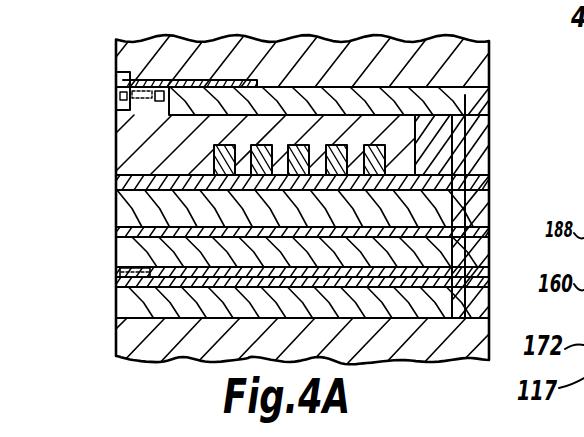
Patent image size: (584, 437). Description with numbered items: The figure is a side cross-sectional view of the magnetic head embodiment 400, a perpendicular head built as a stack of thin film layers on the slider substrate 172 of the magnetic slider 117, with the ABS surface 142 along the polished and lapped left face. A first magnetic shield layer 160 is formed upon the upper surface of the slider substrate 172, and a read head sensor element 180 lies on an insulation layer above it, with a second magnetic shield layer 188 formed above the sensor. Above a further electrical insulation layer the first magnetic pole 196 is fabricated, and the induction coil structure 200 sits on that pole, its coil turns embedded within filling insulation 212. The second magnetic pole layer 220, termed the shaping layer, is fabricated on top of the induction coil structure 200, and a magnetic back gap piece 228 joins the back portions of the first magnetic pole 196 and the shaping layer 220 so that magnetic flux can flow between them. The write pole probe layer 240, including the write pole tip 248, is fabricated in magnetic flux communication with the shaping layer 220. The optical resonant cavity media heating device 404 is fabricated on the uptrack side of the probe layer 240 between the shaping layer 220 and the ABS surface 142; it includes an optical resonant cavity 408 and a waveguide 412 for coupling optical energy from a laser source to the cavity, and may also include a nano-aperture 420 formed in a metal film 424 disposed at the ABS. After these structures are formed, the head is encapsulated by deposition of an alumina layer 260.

The magnetic head embodiment 400 is at (151, 33).
The alumina layer 260 is at (407, 62).
The optical resonant cavity 408 is at (161, 82).
The waveguide 412 is at (166, 90).
The write pole probe layer 240 is at (316, 57).
The second magnetic pole layer 220 is at (456, 113).
The induction coil structure 200 is at (399, 162).
The filling insulation 212 is at (174, 157).
The magnetic back gap piece 228 is at (468, 176).
The ABS surface 142 is at (116, 212).
The first magnetic pole 196 is at (470, 227).
The second magnetic shield layer 188 is at (470, 268).
The first magnetic shield layer 160 is at (470, 284).
The slider substrate 172 is at (428, 353).
The magnetic slider 117 is at (203, 342).
The read head sensor element 180 is at (116, 277).
The write pole tip 248 is at (116, 72).
The nano-aperture 420 is at (119, 92).
The metal film 424 is at (116, 105).
The optical resonant cavity media heating device 404 is at (145, 112).